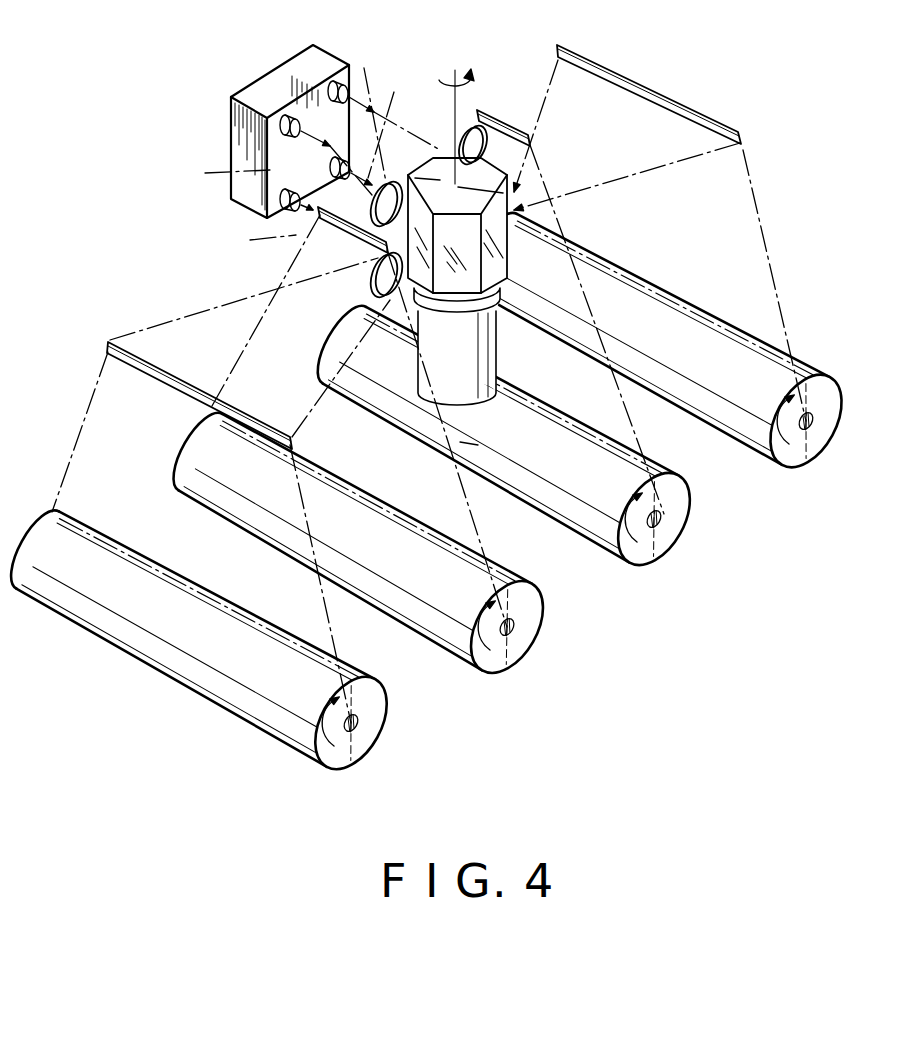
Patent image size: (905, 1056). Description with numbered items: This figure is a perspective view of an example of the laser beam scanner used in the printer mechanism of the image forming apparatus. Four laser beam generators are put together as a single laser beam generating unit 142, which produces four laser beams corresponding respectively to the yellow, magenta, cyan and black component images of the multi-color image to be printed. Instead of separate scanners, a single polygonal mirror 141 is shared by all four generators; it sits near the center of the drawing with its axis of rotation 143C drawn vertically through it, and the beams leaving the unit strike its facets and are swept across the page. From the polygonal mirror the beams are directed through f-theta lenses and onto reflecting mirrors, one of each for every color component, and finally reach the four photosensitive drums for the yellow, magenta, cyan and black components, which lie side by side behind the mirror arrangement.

The laser beam generating unit 142 is at (268, 90).
The polygonal mirror 141 is at (503, 244).
The rotation axis of polygon mirror 143C is at (452, 110).